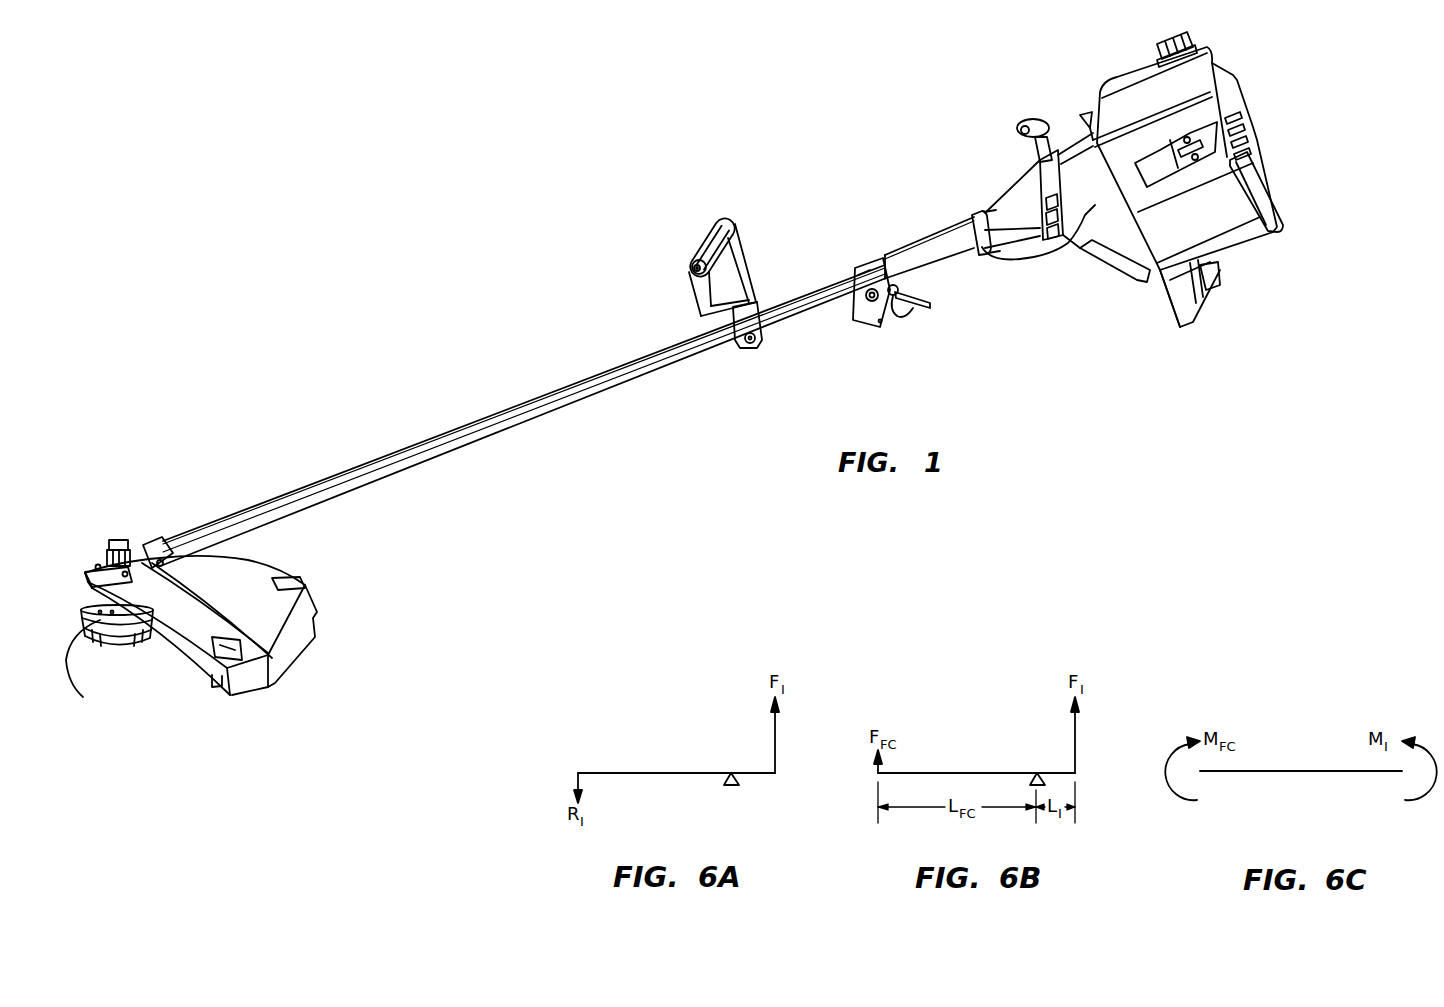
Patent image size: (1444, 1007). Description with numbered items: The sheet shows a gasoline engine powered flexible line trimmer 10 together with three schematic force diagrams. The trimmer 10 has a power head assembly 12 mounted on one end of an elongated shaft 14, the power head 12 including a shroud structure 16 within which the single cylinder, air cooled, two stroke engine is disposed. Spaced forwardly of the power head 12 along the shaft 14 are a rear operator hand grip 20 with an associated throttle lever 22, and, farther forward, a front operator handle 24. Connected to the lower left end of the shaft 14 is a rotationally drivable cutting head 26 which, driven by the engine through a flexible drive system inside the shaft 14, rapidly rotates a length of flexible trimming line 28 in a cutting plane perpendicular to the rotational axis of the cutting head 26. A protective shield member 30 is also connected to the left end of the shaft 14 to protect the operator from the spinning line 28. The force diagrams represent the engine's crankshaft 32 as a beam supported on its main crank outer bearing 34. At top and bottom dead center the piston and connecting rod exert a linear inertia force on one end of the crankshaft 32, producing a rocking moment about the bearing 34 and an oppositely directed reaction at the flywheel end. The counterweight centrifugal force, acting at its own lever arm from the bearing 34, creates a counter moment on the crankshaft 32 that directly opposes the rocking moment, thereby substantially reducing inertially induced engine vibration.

In FIG. 1, the trimmer 10 is at (870, 203).
In FIG. 1, the power head assembly 12 is at (1113, 69).
In FIG. 1, the elongated shaft 14 is at (328, 477).
In FIG. 1, the shroud structure 16 is at (1238, 228).
In FIG. 1, the rear operator hand grip 20 is at (926, 238).
In FIG. 1, the throttle lever 22 is at (907, 307).
In FIG. 1, the front operator handle 24 is at (690, 268).
In FIG. 1, the cutting head 26 is at (117, 630).
In FIG. 1, the flexible trimming line 28 is at (82, 697).
In FIG. 1, the protective shield member 30 is at (232, 564).
In FIG. 6A, the crankshaft portion 32 is at (652, 773).
In FIG. 6B, the crankshaft portion 32 is at (984, 773).
In FIG. 6C, the crankshaft portion 32 is at (1313, 771).
In FIG. 6A, the main crank outer bearing 34 is at (724, 784).